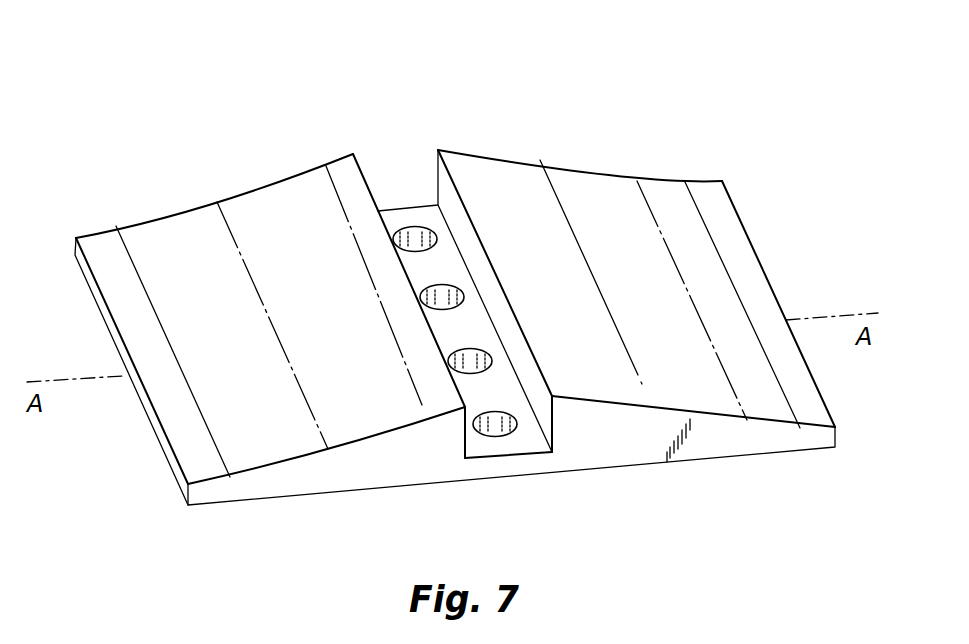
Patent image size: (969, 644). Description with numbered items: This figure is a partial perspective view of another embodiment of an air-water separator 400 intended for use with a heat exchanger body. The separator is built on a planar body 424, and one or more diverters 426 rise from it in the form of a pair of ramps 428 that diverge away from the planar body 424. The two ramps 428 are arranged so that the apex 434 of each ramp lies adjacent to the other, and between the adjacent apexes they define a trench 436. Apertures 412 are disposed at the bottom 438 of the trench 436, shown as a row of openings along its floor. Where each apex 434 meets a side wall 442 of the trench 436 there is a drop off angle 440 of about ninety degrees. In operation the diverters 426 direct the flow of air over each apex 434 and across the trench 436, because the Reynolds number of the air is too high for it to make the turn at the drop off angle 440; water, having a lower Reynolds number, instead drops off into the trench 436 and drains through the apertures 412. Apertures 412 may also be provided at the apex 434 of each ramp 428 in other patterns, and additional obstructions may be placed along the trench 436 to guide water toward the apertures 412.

The air-water separator 400 is at (111, 151).
The apertures 412 is at (442, 299).
The planar body 424 is at (221, 491).
The diverter 426 is at (200, 228).
The ramp 428 is at (334, 90).
The apex 434 is at (324, 174).
The trench 436 is at (406, 190).
The bottom of the trench 438 is at (476, 453).
The drop off angle 440 is at (458, 430).
The side wall 442 is at (544, 430).